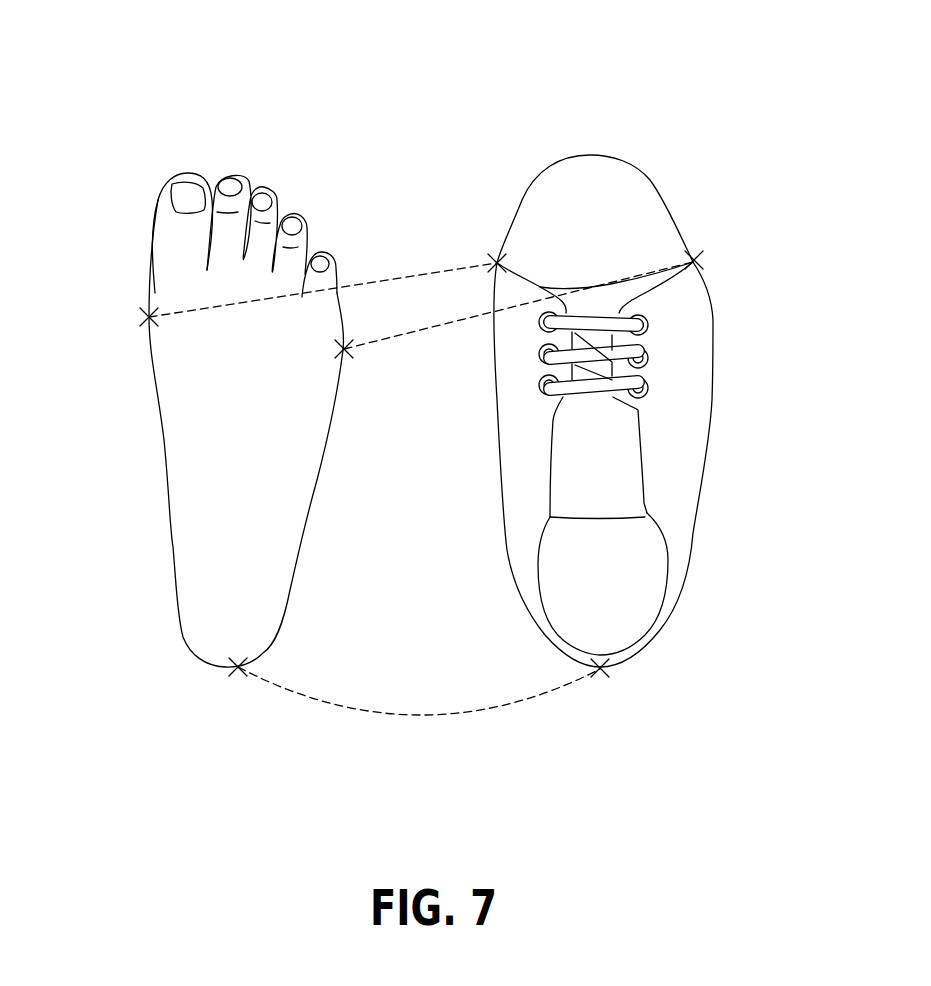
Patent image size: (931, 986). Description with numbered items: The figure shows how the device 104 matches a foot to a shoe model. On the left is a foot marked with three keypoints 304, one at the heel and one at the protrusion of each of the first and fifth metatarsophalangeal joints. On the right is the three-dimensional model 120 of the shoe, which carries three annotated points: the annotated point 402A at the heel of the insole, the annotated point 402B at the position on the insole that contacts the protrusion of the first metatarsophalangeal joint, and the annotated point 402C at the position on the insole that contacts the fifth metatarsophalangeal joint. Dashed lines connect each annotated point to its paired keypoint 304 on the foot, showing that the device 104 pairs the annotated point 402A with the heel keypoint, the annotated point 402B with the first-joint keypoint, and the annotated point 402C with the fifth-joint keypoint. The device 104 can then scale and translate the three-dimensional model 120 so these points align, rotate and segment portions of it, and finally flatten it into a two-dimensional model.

The device 104 is at (458, 32).
The 3D model 120 is at (620, 165).
The keypoint 304 is at (148, 317).
The annotated point 402A is at (600, 668).
The annotated point 402B is at (496, 263).
The annotated point 402C is at (695, 260).